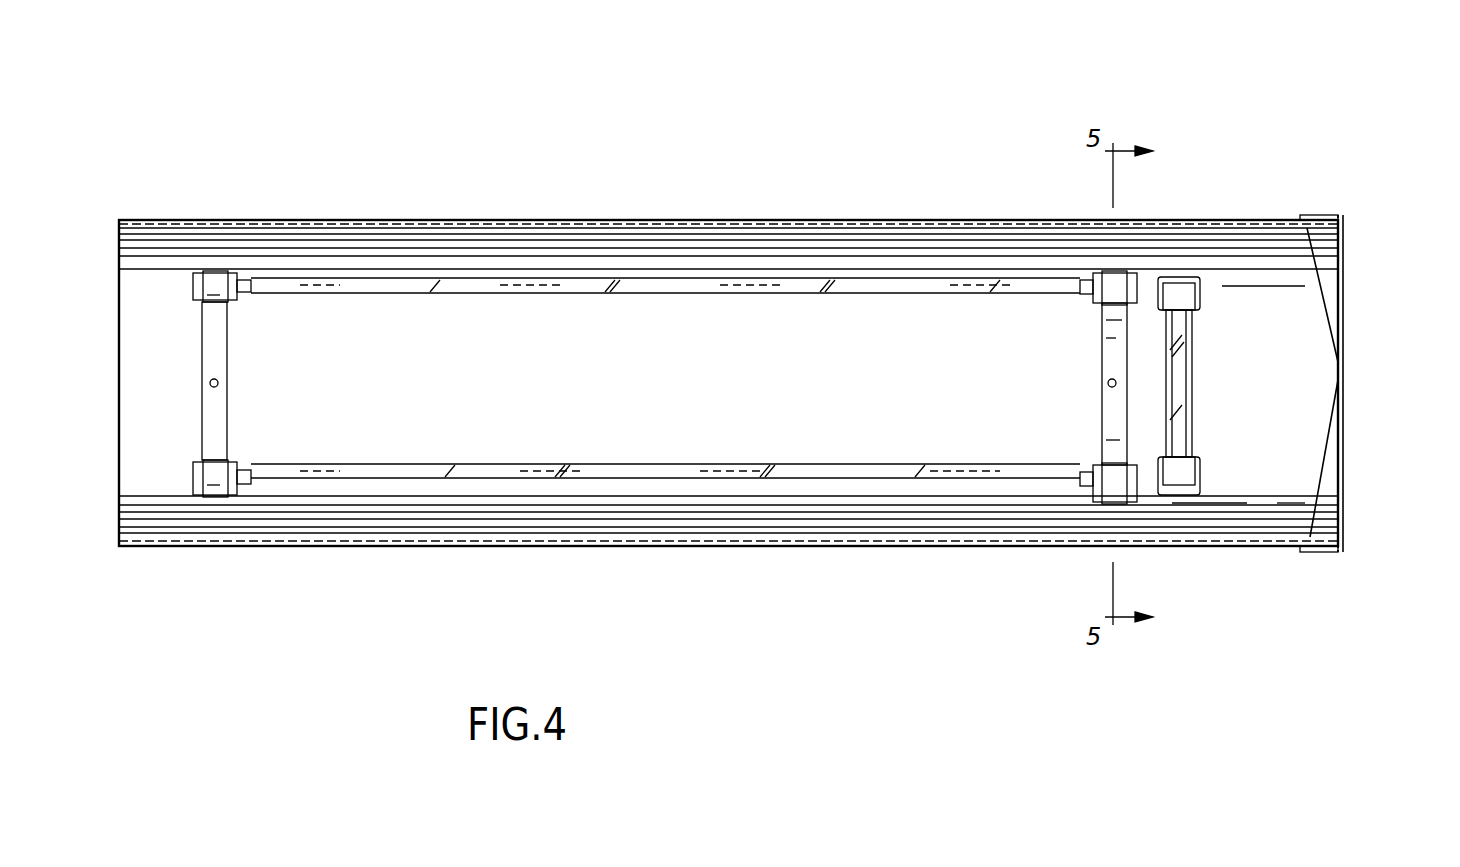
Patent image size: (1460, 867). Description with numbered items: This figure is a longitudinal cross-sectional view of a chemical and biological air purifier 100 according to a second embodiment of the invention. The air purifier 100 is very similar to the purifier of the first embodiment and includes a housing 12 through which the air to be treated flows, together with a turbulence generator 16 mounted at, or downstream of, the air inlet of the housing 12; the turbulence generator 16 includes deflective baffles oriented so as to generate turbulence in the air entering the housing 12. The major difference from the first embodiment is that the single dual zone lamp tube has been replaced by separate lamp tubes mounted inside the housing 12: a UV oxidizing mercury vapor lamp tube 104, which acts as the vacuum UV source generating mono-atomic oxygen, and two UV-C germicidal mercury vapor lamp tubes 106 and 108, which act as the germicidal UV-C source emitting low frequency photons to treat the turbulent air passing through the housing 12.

The air purifier 100 is at (240, 160).
The housing 12 is at (850, 222).
The turbulence generator 16 is at (1345, 508).
The UV oxidizing mercury vapor lamp tube 104 is at (1192, 373).
The UV-C germicidal mercury vapor lamp tube 106 is at (535, 290).
The UV-C germicidal mercury vapor lamp tube 108 is at (697, 480).